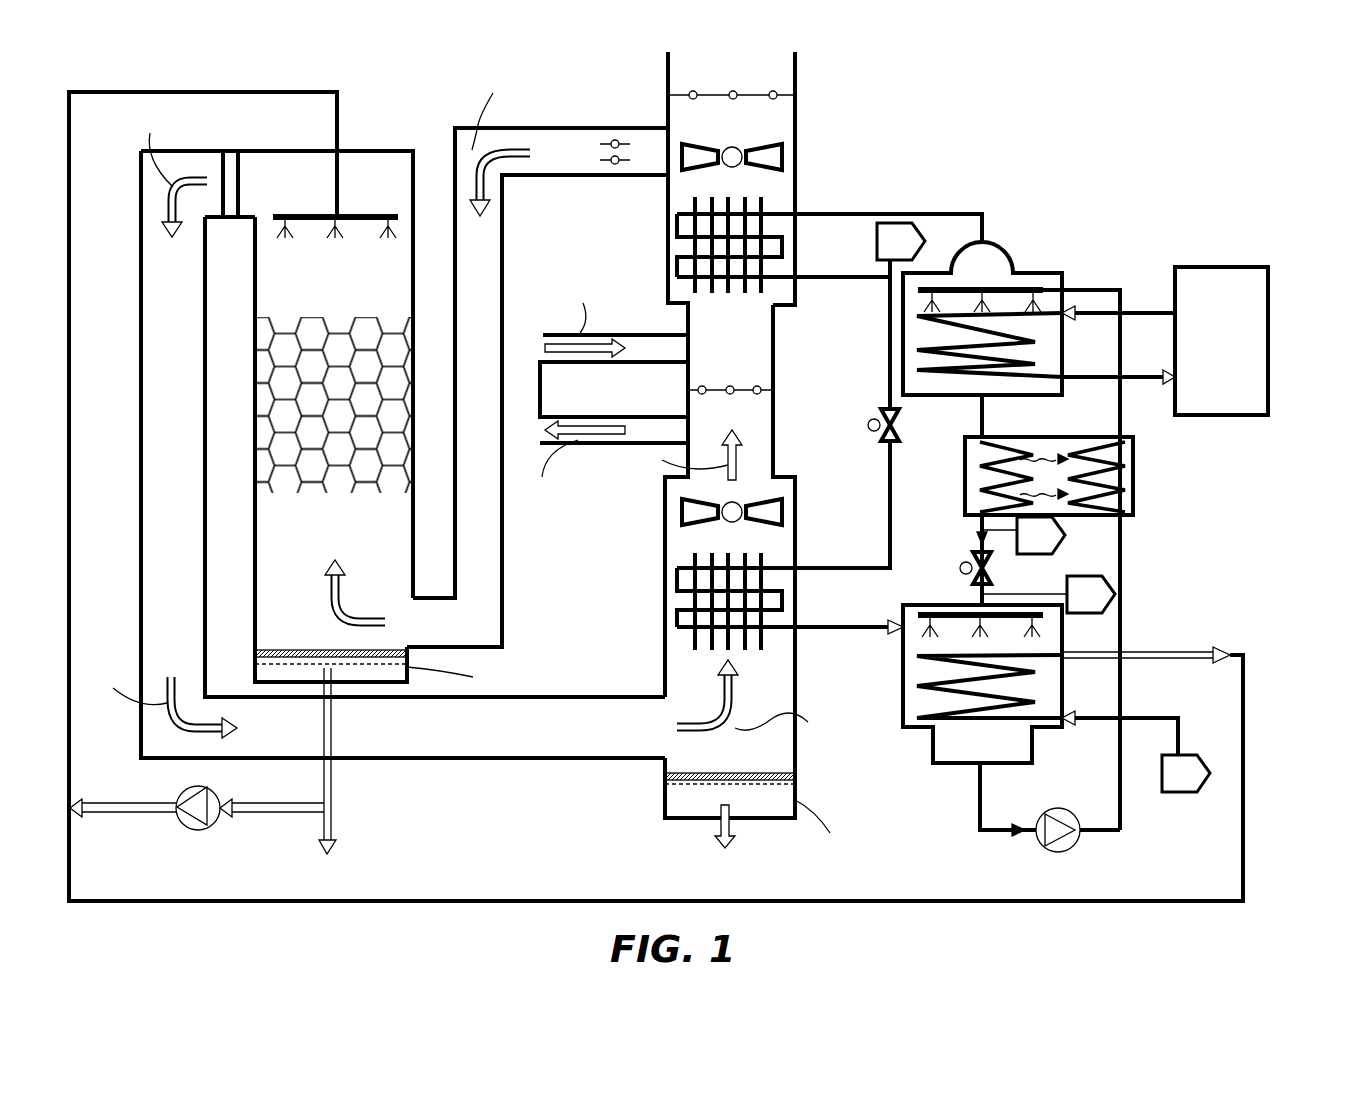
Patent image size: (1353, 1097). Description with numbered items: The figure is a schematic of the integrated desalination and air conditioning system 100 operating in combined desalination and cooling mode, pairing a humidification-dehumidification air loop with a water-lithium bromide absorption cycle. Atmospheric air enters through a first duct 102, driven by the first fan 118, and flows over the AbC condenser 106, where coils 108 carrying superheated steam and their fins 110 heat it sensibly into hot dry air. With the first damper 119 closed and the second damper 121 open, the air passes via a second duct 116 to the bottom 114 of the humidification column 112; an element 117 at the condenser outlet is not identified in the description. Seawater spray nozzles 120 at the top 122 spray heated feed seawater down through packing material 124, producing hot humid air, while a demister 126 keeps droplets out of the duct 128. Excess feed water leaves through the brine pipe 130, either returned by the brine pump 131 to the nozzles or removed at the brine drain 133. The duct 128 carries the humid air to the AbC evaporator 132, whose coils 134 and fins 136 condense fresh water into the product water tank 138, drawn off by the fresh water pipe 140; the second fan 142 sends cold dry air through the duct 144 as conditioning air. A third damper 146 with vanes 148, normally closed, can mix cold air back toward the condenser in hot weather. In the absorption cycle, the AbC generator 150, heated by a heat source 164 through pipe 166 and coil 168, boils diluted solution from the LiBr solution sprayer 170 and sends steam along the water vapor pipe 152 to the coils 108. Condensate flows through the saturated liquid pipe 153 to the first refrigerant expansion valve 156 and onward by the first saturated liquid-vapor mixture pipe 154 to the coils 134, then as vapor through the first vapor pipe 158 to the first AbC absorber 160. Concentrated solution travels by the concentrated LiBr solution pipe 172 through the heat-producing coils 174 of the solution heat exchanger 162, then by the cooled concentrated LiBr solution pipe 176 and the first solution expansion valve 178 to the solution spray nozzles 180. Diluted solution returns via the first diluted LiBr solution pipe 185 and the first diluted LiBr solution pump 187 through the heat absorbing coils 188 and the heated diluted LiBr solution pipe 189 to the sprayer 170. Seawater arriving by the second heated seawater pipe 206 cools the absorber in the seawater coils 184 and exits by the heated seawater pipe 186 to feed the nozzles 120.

The integrated desalination and air conditioning system 100 is at (701, 473).
The first duct 102 is at (553, 365).
The AbC condenser 106 is at (815, 183).
The coils 108 is at (683, 264).
The fins 110 is at (695, 285).
The humidification column 112 is at (334, 431).
The bottom of the humidification column 114 is at (318, 618).
The second duct 116 is at (505, 255).
The exhaust outlet 117 is at (668, 68).
The first fan 118 is at (782, 152).
The first damper 119 is at (710, 95).
The seawater spray nozzles 120 is at (318, 238).
The second damper 121 is at (612, 140).
The top of the humidification column 122 is at (338, 239).
The packing material 124 is at (350, 485).
The demister 126 is at (235, 177).
The duct 128 is at (200, 438).
The brine pipe 130 is at (333, 787).
The brine pump 131 is at (200, 830).
The AbC evaporator 132 is at (646, 563).
The brine drain 133 is at (335, 855).
The coils 134 is at (677, 625).
The fins 136 is at (693, 650).
The product water tank 138 is at (665, 800).
The fresh water pipe 140 is at (718, 827).
The second fan 142 is at (680, 515).
The duct 144 is at (598, 447).
The third damper 146 is at (830, 375).
The vanes 148 is at (740, 388).
The AbC generator 150 is at (1039, 282).
The water vapor pipe 152 is at (962, 213).
The saturated liquid pipe 153 is at (887, 333).
The first saturated liquid-vapor mixture pipe 154 is at (893, 478).
The first refrigerant expansion valve 156 is at (908, 431).
The first vapor pipe 158 is at (882, 592).
The first AbC absorber 160 is at (1090, 684).
The solution heat exchanger 162 is at (1100, 480).
The heat source 164 is at (1243, 358).
The pipe 166 is at (1153, 307).
The coil 168 is at (1020, 355).
The LiBr solution sprayer 170 is at (990, 288).
The concentrated LiBr solution pipe 172 is at (987, 420).
The heat-producing coils 174 is at (1035, 512).
The cooled concentrated LiBr solution pipe 176 is at (977, 530).
The first solution expansion valve 178 is at (1009, 568).
The solution spray nozzles 180 is at (1062, 630).
The seawater coils 184 is at (1025, 700).
The first diluted LiBr solution pipe 185 is at (1110, 757).
The heated seawater pipe 186 is at (1245, 812).
The first diluted LiBr solution pump 187 is at (1080, 845).
The heat absorbing coils 188 is at (1130, 480).
The heated diluted LiBr solution pipe 189 is at (1127, 413).
The second heated seawater pipe 206 is at (1185, 742).